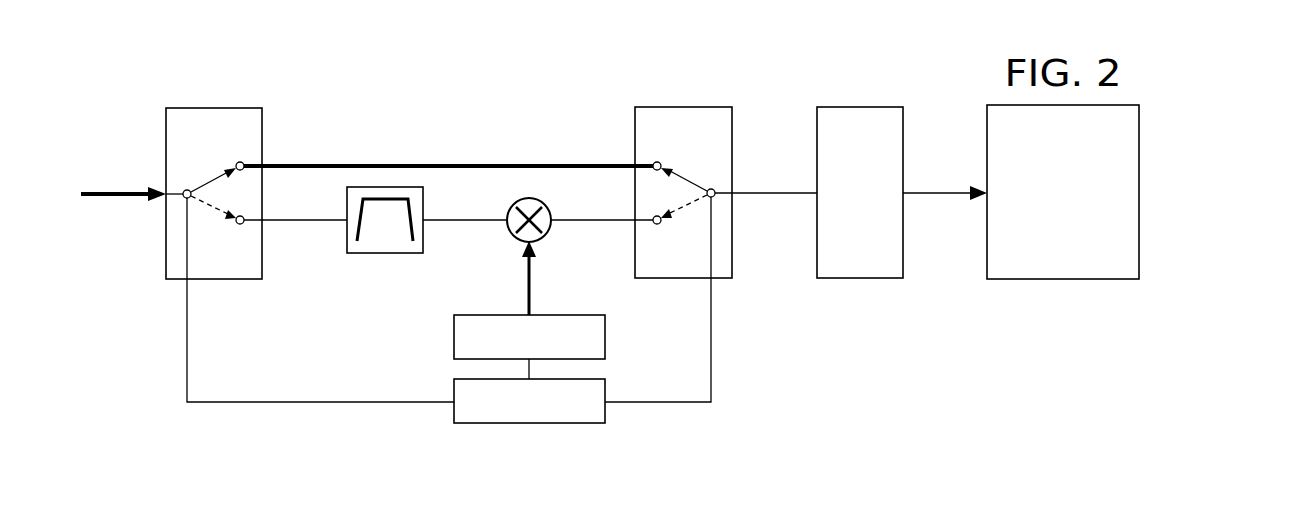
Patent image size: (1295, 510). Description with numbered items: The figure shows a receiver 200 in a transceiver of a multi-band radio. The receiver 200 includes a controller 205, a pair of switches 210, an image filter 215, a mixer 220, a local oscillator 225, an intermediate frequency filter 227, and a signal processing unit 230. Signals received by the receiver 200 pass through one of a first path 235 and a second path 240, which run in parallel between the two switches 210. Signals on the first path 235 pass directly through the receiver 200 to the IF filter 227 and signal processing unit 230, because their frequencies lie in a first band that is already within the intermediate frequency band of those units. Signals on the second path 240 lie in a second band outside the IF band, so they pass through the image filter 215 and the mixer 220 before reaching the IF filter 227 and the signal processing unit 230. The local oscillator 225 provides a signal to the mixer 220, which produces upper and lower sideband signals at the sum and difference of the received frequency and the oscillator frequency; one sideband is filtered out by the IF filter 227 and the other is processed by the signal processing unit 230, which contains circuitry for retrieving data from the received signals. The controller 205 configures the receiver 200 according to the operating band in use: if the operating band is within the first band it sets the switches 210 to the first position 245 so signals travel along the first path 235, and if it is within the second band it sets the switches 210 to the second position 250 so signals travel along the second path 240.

The receiver 200 is at (1181, 148).
The controller 205 is at (454, 410).
The switches 210 is at (199, 101).
The image filter 215 is at (347, 206).
The mixer 220 is at (546, 235).
The local oscillator 225 is at (454, 338).
The intermediate frequency filter 227 is at (840, 237).
The signal processing unit 230 is at (1043, 249).
The first path 235 is at (449, 163).
The second path 240 is at (302, 224).
The first position 245 is at (222, 176).
The second position 250 is at (208, 212).